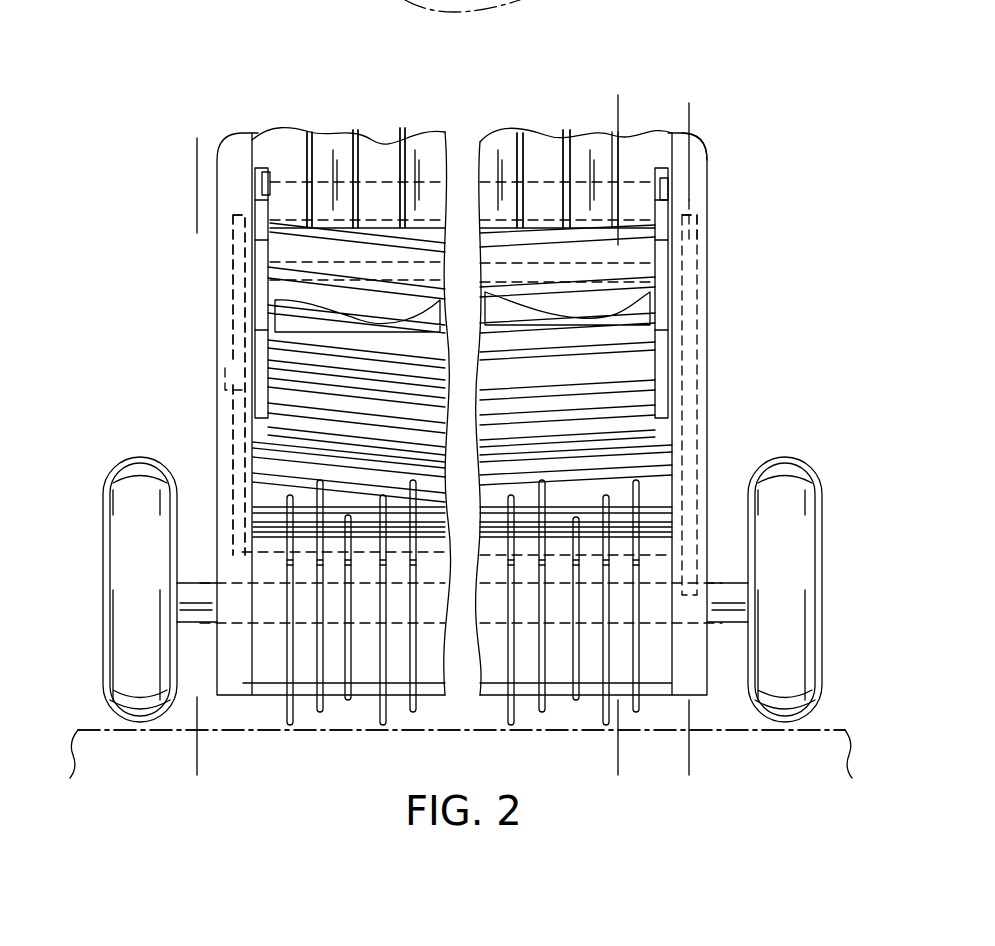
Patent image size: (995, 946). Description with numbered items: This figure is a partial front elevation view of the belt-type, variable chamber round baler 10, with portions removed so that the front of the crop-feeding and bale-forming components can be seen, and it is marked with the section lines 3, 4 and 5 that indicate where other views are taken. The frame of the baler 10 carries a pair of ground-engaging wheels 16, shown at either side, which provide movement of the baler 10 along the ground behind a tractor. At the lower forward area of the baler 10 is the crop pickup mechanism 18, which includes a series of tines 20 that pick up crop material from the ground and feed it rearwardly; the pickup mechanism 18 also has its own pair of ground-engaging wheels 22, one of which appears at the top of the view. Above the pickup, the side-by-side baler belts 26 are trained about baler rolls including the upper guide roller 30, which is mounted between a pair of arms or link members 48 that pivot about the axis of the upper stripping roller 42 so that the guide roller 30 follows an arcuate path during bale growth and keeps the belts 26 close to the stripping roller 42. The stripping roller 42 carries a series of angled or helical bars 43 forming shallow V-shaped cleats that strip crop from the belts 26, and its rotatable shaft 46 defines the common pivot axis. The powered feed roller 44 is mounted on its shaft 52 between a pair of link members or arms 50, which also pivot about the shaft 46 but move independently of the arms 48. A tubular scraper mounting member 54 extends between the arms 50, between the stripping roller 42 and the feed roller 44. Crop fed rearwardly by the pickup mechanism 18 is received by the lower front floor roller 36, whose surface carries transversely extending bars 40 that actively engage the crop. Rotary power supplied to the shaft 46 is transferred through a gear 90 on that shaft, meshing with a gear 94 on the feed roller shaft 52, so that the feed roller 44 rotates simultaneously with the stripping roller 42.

The round baler 10 is at (772, 222).
The ground-engaging wheels 16 is at (110, 470).
The crop pickup mechanism 18 is at (437, 733).
The tines 20 is at (346, 715).
The ground-engaging wheels 22 is at (542, 0).
The baler belts 26 is at (413, 118).
The upper guide roller 30 is at (262, 170).
The lower front floor roller 36 is at (662, 443).
The transversely extending bars 40 is at (668, 508).
The upper stripping roller 42 is at (607, 330).
The angled or helical bars 43 is at (300, 287).
The powered feed roller 44 is at (660, 313).
The rotatable shaft 46 is at (672, 240).
The arms or link members 48 is at (262, 175).
The link members or arms 50 is at (262, 357).
The shaft 52 is at (242, 420).
The tubular scraper mounting member 54 is at (275, 330).
The gear 90 is at (230, 236).
The gear 94 is at (225, 369).
The section line 3- 3 is at (615, 103).
The section line 4- 4 is at (632, 116).
The section line 5- 5 is at (194, 152).